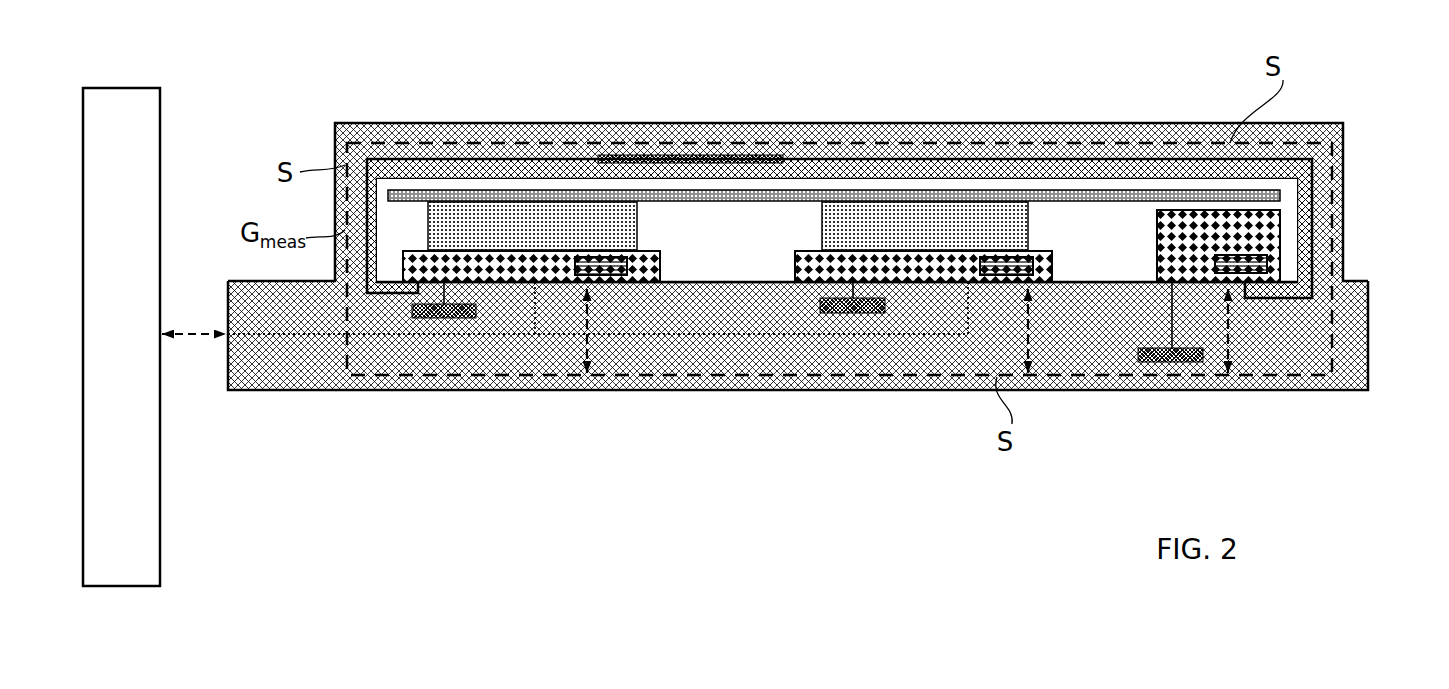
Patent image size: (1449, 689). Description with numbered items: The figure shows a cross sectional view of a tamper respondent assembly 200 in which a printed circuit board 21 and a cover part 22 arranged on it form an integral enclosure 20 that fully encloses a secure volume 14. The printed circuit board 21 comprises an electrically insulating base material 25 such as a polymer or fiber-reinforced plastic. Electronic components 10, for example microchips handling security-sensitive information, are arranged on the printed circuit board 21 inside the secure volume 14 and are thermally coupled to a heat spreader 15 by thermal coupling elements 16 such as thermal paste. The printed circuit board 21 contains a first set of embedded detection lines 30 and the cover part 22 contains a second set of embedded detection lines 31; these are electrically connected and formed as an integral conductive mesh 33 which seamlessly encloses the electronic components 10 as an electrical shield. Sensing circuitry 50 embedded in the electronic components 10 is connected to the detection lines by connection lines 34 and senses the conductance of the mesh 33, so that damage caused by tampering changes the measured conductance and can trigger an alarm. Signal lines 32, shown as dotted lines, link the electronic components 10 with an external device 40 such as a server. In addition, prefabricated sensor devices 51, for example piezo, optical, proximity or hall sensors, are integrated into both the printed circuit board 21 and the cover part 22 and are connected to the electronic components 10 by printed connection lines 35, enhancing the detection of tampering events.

The electronic component 10 is at (405, 251).
The secure volume 14 is at (822, 225).
The heat spreader 15 is at (587, 190).
The thermal coupling element 16 is at (637, 228).
The enclosure 20 is at (330, 113).
The printed circuit board 21 is at (1385, 281).
The cover part 22 is at (1045, 123).
The base material 25 is at (688, 380).
The first set of embedded detection lines 30 is at (547, 390).
The second set of embedded detection lines 31 is at (867, 158).
The signal lines 32 is at (323, 375).
The integral conductive mesh 33 is at (1336, 139).
The connection lines 34 is at (591, 352).
The connection lines 35 is at (405, 158).
The external device 40 is at (152, 530).
The sensing circuitry 50 is at (613, 282).
The sensor device 51 is at (693, 155).
The tamper respondent assembly 200 is at (1025, 538).